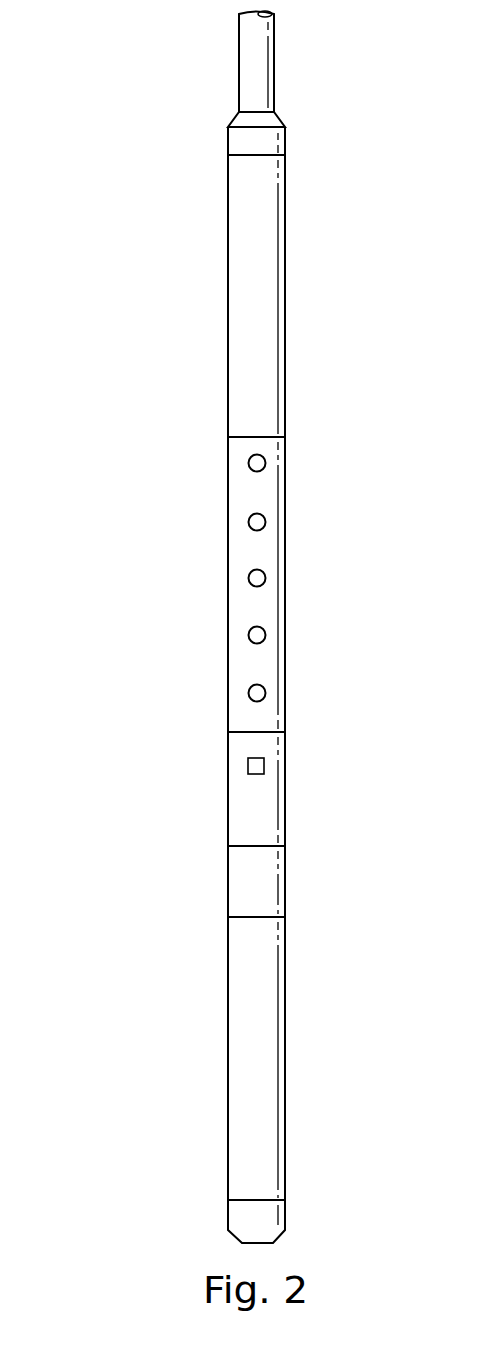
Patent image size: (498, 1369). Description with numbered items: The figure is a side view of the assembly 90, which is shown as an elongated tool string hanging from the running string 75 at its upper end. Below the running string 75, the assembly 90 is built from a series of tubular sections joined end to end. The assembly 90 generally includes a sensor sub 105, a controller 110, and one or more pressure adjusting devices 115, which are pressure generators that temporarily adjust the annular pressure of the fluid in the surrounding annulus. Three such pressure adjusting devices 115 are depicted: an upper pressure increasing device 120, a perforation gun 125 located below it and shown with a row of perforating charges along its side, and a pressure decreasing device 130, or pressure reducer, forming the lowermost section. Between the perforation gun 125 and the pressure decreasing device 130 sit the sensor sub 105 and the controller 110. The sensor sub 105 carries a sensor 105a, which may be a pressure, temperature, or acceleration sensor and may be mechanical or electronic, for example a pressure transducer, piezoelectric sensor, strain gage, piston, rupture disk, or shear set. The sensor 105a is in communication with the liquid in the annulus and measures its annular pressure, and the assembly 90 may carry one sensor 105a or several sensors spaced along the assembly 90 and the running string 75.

The running string 75 is at (239, 62).
The assembly 90 is at (206, 627).
The sensor sub 105 is at (260, 789).
The sensor 105a is at (264, 766).
The controller 110 is at (228, 883).
The pressure adjusting devices 115 is at (187, 247).
The pressure increasing device 120 is at (228, 300).
The perforation gun 125 is at (228, 577).
The pressure decreasing device 130 is at (228, 1072).